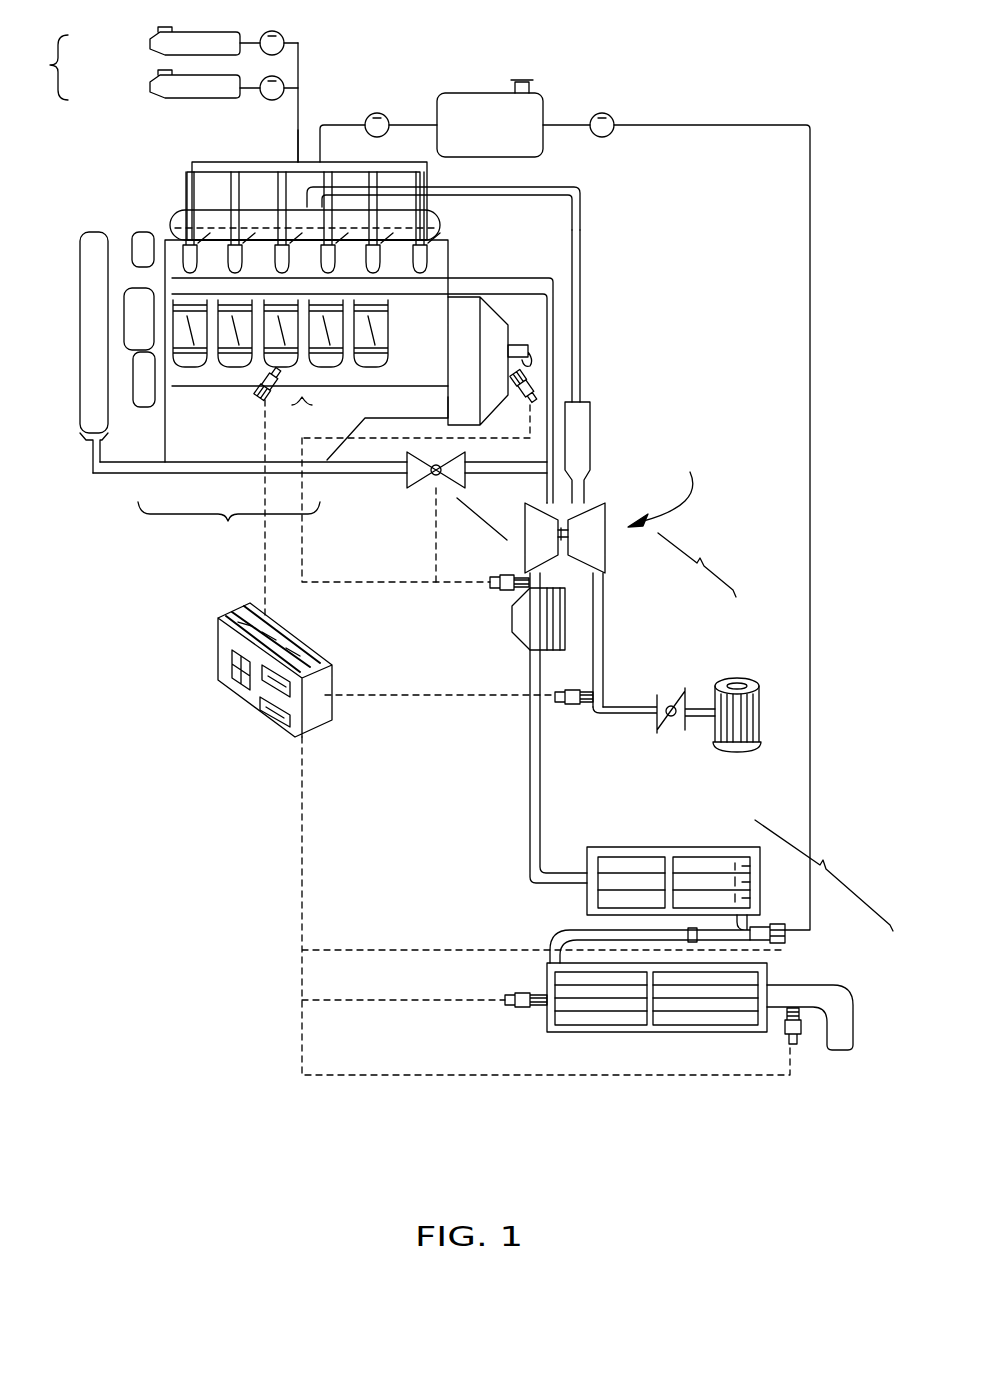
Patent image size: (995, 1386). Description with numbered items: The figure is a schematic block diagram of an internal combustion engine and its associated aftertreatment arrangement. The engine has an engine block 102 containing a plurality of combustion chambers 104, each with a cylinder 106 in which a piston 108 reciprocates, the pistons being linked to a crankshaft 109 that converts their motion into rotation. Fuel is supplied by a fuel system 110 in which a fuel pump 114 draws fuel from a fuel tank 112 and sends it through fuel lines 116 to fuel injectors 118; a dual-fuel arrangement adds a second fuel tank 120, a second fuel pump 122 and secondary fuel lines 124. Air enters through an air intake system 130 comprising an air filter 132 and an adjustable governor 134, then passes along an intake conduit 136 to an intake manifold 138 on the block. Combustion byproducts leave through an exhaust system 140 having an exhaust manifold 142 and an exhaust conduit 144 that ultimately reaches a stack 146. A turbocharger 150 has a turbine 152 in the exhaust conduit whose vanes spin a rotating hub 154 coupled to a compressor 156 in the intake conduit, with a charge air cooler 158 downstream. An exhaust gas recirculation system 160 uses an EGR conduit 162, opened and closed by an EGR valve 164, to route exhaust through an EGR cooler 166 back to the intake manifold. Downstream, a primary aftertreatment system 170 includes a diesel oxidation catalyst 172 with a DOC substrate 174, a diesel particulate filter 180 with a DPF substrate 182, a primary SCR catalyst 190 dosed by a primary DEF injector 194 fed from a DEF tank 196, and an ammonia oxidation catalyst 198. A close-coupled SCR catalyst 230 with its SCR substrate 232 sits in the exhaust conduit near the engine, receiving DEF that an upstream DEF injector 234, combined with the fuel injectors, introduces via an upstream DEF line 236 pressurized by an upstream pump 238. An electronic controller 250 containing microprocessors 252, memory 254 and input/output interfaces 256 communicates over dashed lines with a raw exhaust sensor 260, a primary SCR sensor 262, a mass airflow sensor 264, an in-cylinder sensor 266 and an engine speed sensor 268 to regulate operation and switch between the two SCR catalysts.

The engine block 102 is at (205, 445).
The combustion chambers 104 is at (368, 428).
The cylinder 106 is at (103, 437).
The piston 108 is at (330, 352).
The crankshaft 109 is at (527, 350).
The fuel system 110 is at (42, 67).
The fuel tank 112 is at (150, 40).
The fuel pump 114 is at (286, 40).
The fuel lines 116 is at (300, 68).
The fuel injectors 118 is at (280, 246).
The second fuel tank 120 is at (150, 86).
The second fuel pump 122 is at (260, 146).
The secondary fuel lines 124 is at (264, 100).
The air intake system 130 is at (697, 554).
The air filter 132 is at (746, 679).
The adjustable governor 134 is at (682, 702).
The intake conduit 136 is at (583, 322).
The intake manifold 138 is at (440, 232).
The exhaust system 140 is at (479, 528).
The exhaust manifold 142 is at (458, 292).
The exhaust conduit 144 is at (557, 378).
The stack 146 is at (832, 990).
The turbocharger 150 is at (663, 482).
The turbine 152 is at (528, 520).
The rotating hub 154 is at (574, 550).
The compressor 156 is at (592, 528).
The charge air cooler 158 is at (584, 440).
The exhaust gas recirculation system 160 is at (229, 529).
The EGR conduit 162 is at (370, 478).
The EGR valve 164 is at (430, 490).
The EGR cooler 166 is at (80, 410).
The primary aftertreatment system 170 is at (824, 875).
The diesel oxidation catalyst 172 is at (598, 870).
The DOC substrate 174 is at (598, 885).
The diesel particulate filter 180 is at (677, 862).
The DPF substrate 182 is at (702, 862).
The primary SCR catalyst 190 is at (640, 1030).
The primary DEF injector 194 is at (765, 923).
The DEF tank 196 is at (535, 105).
The ammonia oxidation catalyst 198 is at (725, 1030).
The close-coupled SCR catalyst 230 is at (514, 636).
The SCR substrate 232 is at (546, 632).
The upstream DEF injector 234 is at (305, 226).
The upstream DEF line 236 is at (330, 122).
The upstream pump 238 is at (380, 113).
The electronic controller 250 is at (228, 628).
The microprocessors 252 is at (238, 690).
The memory 254 is at (290, 683).
The input/output interfaces 256 is at (273, 713).
The raw exhaust sensor 260 is at (490, 586).
The primary SCR sensor 262 is at (512, 1008).
The mass airflow sensor 264 is at (571, 708).
The in-cylinder sensor 266 is at (260, 393).
The engine speed sensor 268 is at (545, 400).